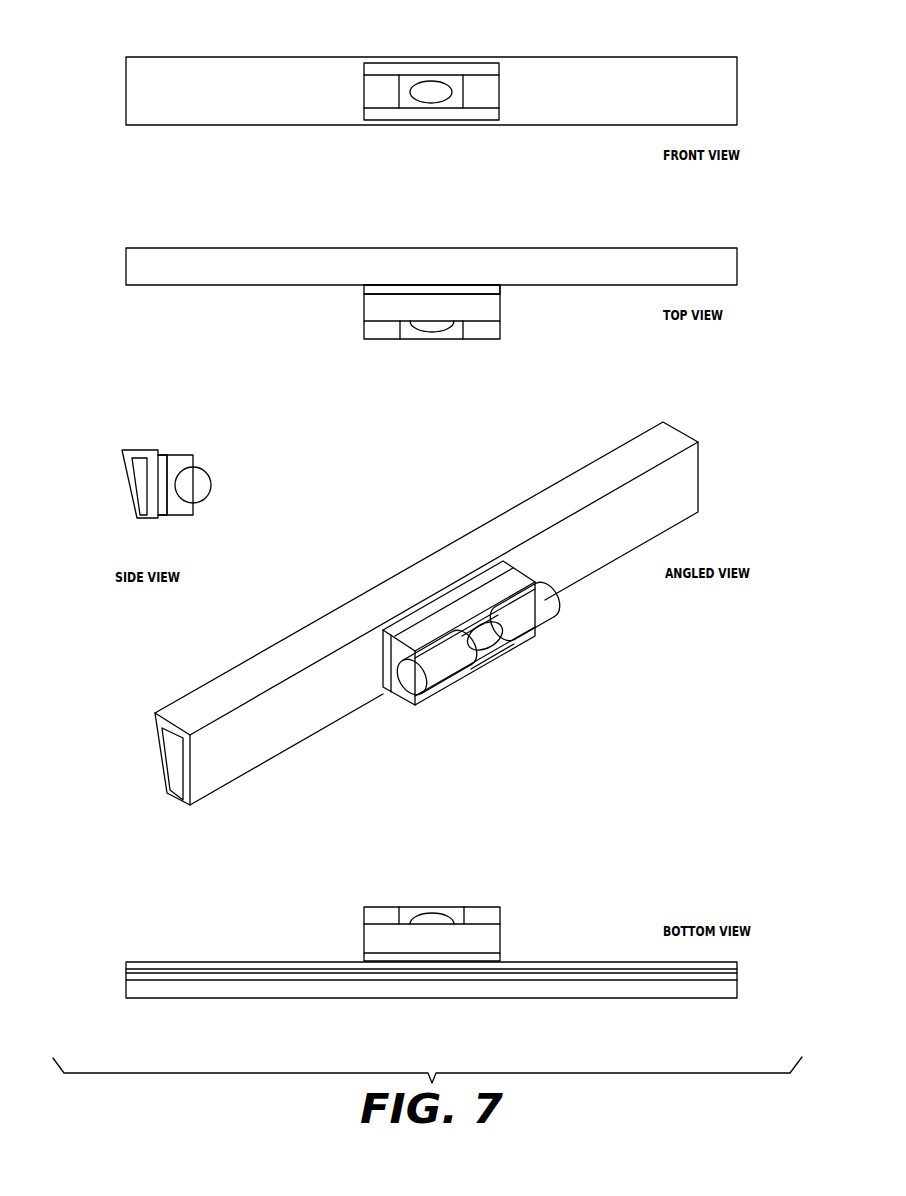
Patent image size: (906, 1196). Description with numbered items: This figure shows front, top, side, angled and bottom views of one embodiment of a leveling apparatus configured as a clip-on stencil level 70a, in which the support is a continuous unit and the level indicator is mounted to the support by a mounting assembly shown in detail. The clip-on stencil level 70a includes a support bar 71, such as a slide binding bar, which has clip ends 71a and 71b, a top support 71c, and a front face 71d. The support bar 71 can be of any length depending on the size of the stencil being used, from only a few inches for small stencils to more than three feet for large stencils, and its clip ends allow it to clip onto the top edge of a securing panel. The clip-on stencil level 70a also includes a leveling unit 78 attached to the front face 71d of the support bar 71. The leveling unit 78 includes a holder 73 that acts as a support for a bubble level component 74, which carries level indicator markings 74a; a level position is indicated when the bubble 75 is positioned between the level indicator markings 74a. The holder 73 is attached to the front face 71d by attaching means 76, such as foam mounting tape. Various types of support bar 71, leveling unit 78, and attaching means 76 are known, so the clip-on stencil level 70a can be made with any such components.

The clip-on stencil level 70a is at (110, 44).
The support bar 71 is at (593, 66).
The clip end 71a is at (152, 520).
The clip end 71b is at (140, 520).
The top support 71c is at (140, 452).
The front face 71d is at (288, 742).
The holder 73 is at (483, 67).
The bubble level component 74 is at (380, 78).
The level indicator markings 74a is at (395, 98).
The bubble 75 is at (431, 87).
The attaching means 76 is at (482, 285).
The leveling unit 78 is at (348, 313).